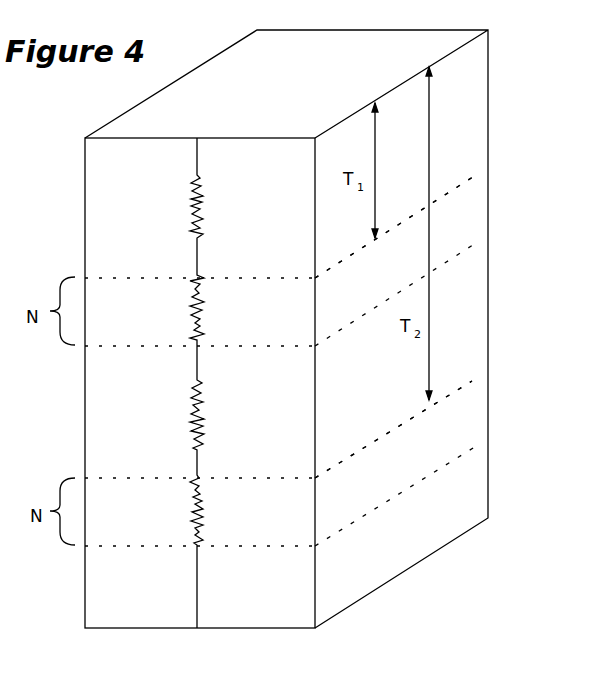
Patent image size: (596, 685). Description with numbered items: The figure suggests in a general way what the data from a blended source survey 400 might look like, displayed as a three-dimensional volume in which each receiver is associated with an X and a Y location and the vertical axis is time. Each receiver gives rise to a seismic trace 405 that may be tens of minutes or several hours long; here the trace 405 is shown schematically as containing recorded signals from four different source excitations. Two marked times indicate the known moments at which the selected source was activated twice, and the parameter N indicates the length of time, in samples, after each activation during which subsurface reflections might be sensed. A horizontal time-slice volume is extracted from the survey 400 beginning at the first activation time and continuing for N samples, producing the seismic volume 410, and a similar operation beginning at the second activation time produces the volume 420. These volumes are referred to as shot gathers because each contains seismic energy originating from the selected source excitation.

The survey 400 is at (402, 43).
The seismic trace 405 is at (197, 138).
The seismic volume 410 is at (473, 170).
The volume 420 is at (471, 372).